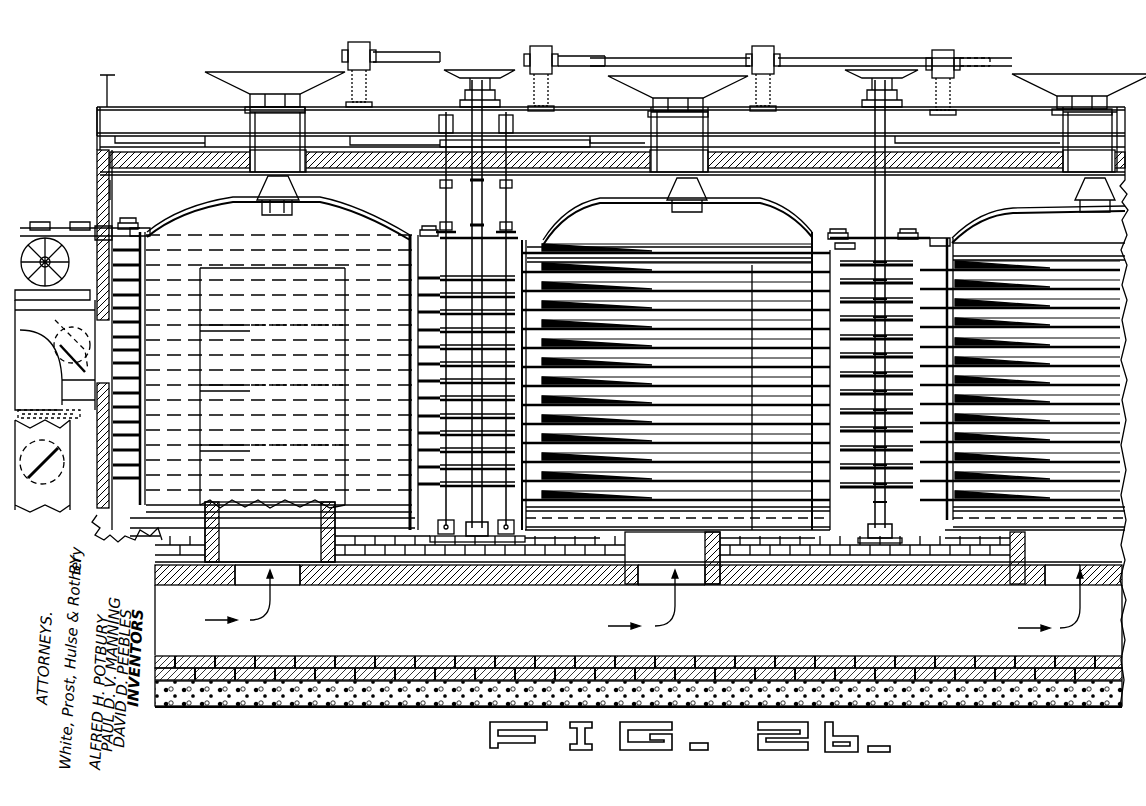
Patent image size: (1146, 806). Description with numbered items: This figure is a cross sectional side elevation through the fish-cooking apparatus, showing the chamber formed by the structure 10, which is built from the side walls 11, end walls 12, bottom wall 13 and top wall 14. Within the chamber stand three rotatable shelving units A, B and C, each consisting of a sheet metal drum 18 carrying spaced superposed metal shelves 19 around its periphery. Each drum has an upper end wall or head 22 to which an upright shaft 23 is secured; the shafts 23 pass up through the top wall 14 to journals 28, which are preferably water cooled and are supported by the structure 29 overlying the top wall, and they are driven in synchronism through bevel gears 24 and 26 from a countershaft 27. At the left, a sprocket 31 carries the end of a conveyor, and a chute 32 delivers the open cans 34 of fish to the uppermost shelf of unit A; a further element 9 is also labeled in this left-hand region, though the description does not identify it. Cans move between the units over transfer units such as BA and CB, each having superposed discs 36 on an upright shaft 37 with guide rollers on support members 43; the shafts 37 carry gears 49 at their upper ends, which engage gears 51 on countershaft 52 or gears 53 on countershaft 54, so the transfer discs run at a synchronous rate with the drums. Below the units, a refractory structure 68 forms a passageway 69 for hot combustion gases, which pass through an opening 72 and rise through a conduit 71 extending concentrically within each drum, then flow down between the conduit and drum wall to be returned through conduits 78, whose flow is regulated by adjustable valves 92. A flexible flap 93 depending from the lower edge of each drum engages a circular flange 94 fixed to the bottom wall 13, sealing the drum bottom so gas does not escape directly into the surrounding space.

The pipe 9 is at (82, 365).
The structure 10 is at (87, 195).
The side walls 11 is at (55, 355).
The end walls 12 is at (98, 178).
The bottom wall 13 is at (552, 585).
The top wall 14 is at (585, 151).
The drum 18 is at (412, 287).
The shelves 19 is at (208, 250).
The upper end wall or head 22 is at (372, 205).
The shaft 23 is at (300, 180).
The bevel gear 24 is at (250, 72).
The bevel gear 26 is at (360, 42).
The countershaft 27 is at (412, 52).
The journals 28 is at (683, 139).
The structure 29 is at (135, 108).
The sprocket 31 is at (58, 284).
The chute 32 is at (95, 238).
The cans 34 is at (118, 224).
The discs 36 is at (486, 492).
The shaft 37 is at (484, 184).
The support members 43 is at (445, 188).
The gears 49 is at (462, 70).
The gears 51 is at (536, 46).
The countershaft 52 is at (575, 56).
The gears 53 is at (940, 50).
The countershaft 54 is at (980, 58).
The refractory structure 68 is at (470, 585).
The passageway 69 is at (638, 620).
The conduit 71 is at (200, 353).
The passageway or opening 72 is at (255, 570).
The conduits 78 is at (75, 416).
The adjustable valves 92 is at (64, 448).
The flexible flap 93 is at (128, 519).
The circular flange 94 is at (128, 536).
The unit A is at (180, 203).
The unit B is at (597, 200).
The unit C is at (967, 212).
The transfer unit BA is at (496, 229).
The transfer unit CB is at (895, 236).